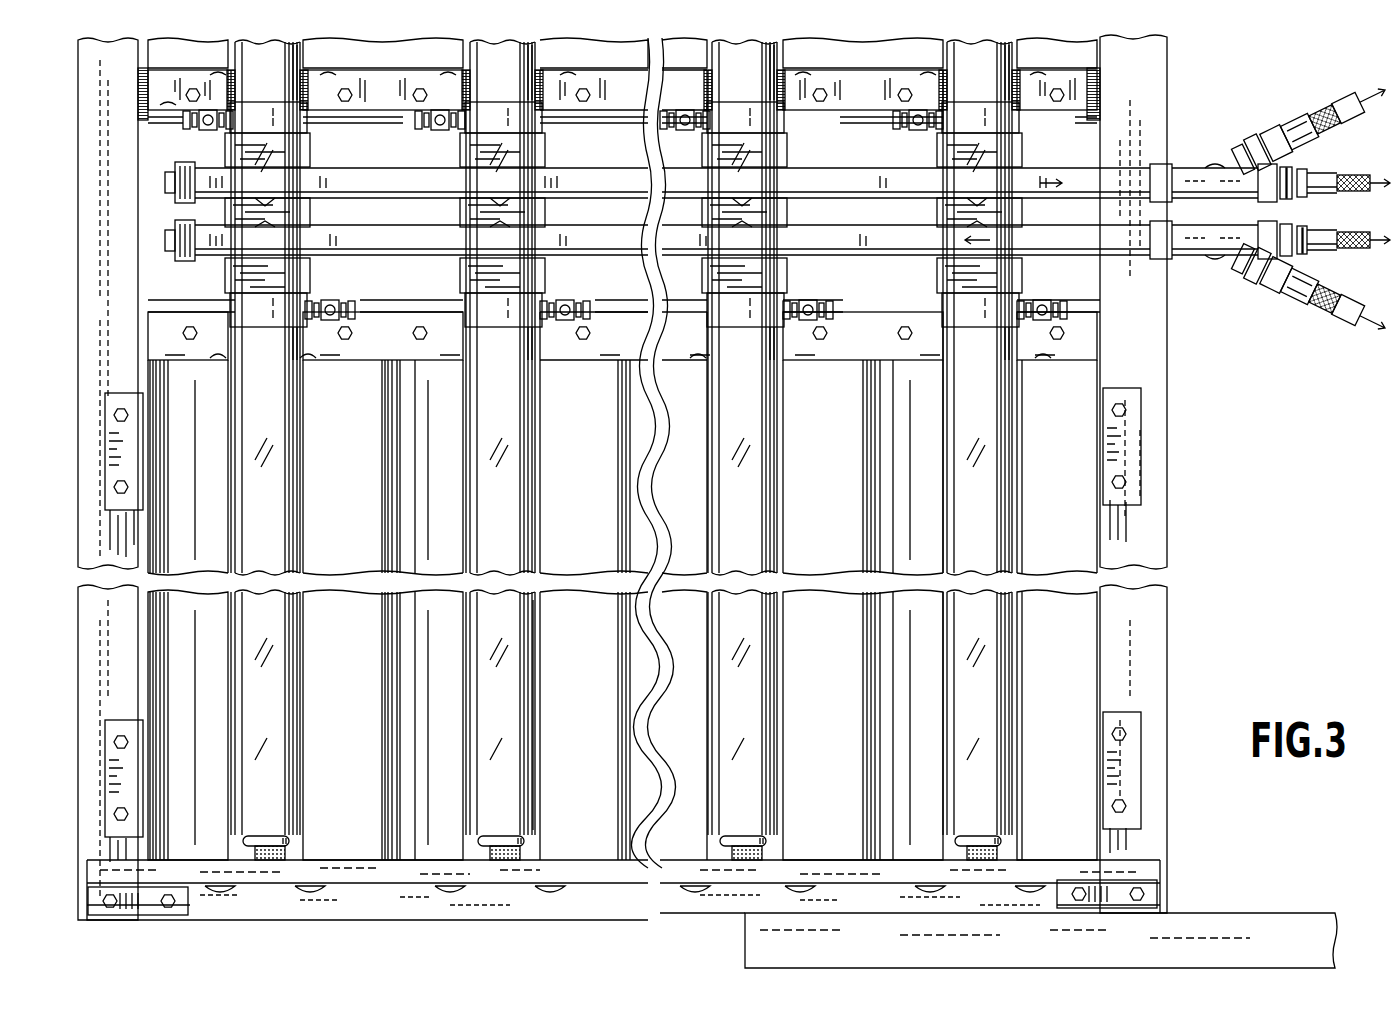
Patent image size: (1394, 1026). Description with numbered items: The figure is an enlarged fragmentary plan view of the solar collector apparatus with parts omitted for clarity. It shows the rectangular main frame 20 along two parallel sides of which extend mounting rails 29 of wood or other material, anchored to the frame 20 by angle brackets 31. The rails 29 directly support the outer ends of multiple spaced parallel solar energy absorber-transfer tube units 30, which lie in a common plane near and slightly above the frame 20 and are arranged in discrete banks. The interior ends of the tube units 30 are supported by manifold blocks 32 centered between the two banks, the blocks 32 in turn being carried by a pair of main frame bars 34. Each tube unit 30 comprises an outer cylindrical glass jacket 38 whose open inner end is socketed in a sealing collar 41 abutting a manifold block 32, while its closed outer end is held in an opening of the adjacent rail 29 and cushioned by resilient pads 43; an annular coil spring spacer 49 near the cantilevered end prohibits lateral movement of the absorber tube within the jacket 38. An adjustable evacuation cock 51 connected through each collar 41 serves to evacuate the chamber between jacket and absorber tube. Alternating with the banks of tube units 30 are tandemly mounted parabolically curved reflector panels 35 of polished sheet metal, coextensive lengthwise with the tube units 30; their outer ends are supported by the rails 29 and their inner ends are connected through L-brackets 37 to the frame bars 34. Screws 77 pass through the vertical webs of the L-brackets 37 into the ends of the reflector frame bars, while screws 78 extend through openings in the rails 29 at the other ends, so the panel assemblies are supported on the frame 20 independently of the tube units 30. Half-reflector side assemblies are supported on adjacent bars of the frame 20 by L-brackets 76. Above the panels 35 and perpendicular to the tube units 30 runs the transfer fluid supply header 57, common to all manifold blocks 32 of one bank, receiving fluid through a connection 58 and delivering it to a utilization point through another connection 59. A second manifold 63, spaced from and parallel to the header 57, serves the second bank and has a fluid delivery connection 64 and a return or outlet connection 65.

The frame 20 is at (1155, 670).
The mounting rail 29 is at (372, 885).
The solar energy absorber-transfer tube unit 30 is at (278, 68).
The angle bracket 31 is at (145, 902).
The manifold block 32 is at (283, 160).
The main frame bar 34 is at (145, 96).
The parabolically curved elongated reflector panel 35 is at (167, 55).
The L-bracket 37 is at (612, 102).
The outer cylindrical glass jacket 38 is at (525, 692).
The sealing collar 41 is at (250, 115).
The resilient pad 43 is at (285, 853).
The annular coil spring spacer 49 is at (275, 838).
The adjustable evacuation cock 51 is at (200, 130).
The transfer fluid supply header 57 is at (392, 257).
The connection 58 is at (1305, 288).
The connection 59 is at (1328, 247).
The second manifold 63 is at (390, 182).
The fluid delivery connection 64 is at (1310, 182).
The return or outlet connection 65 is at (1262, 131).
The L-bracket 76 is at (118, 472).
The screw 77 is at (290, 350).
The screw 78 is at (315, 895).